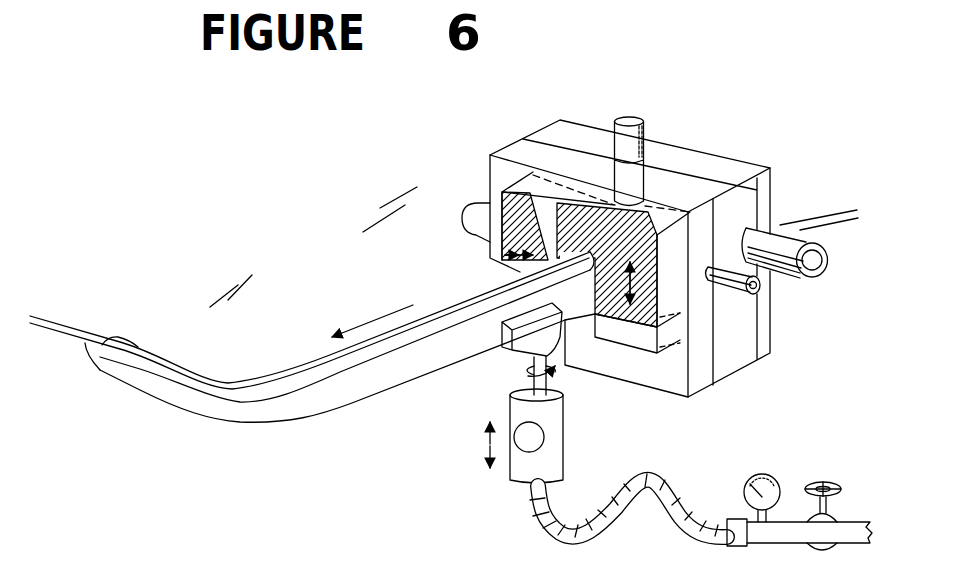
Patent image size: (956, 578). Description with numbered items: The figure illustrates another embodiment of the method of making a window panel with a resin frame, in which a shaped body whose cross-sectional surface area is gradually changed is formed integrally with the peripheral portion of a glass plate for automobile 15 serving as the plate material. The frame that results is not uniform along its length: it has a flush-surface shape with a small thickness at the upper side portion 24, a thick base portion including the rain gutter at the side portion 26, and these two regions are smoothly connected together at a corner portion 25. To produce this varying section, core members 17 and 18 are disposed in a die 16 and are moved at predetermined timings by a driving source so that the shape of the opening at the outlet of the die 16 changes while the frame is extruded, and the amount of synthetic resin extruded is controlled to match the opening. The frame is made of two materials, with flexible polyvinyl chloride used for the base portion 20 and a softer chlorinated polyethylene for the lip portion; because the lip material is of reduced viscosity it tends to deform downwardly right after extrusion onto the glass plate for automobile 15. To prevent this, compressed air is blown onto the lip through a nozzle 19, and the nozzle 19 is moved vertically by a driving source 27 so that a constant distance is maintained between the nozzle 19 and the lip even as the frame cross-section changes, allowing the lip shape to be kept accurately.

The glass plate for automobile 15 is at (258, 248).
The die 16 is at (680, 173).
The core member 17 is at (618, 308).
The core member 18 is at (500, 242).
The nozzle 19 is at (520, 350).
The base portion 20 is at (114, 337).
The upper side portion 24 is at (118, 370).
The corner portion 25 is at (247, 422).
The side portion 26 is at (410, 362).
The driving source 27 is at (523, 470).